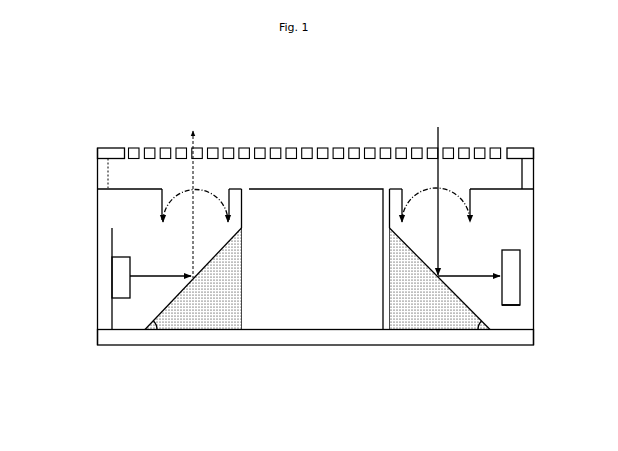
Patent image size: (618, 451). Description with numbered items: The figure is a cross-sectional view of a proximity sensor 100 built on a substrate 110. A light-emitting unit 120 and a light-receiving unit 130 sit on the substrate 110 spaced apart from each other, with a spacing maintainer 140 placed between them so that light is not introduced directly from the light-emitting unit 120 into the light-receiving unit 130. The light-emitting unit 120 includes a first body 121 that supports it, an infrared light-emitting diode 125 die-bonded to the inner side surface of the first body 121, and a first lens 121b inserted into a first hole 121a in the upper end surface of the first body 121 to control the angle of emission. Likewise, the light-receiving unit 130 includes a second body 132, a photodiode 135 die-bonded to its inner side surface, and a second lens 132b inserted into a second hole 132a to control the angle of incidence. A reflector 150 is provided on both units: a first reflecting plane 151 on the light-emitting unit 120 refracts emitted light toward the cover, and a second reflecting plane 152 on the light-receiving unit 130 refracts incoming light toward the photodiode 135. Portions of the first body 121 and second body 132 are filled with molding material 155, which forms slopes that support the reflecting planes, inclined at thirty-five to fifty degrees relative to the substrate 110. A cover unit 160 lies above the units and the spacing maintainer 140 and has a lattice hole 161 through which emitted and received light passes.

The proximity sensor 100 is at (568, 102).
The substrate 110 is at (495, 335).
The light-emitting unit 120 is at (48, 196).
The first body 121 is at (97, 317).
The first hole 121a is at (162, 200).
The first lens 121b is at (175, 222).
The infrared light-emitting diode 125 is at (112, 275).
The light-receiving unit 130 is at (575, 202).
The second body 132 is at (534, 276).
The second hole 132a is at (462, 193).
The second lens 132b is at (452, 222).
The photodiode 135 is at (512, 300).
The spacing maintainer 140 is at (322, 323).
The reflector 150 is at (313, 332).
The first reflecting plane 151 is at (172, 294).
The second reflecting plane 152 is at (455, 293).
The molding material 155 is at (177, 320).
The cover unit 160 is at (520, 148).
The lattice hole 161 is at (478, 148).